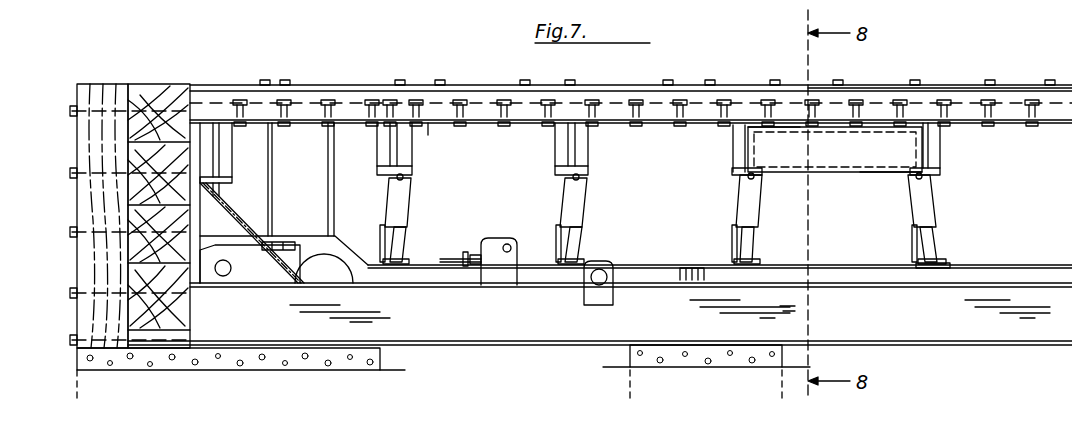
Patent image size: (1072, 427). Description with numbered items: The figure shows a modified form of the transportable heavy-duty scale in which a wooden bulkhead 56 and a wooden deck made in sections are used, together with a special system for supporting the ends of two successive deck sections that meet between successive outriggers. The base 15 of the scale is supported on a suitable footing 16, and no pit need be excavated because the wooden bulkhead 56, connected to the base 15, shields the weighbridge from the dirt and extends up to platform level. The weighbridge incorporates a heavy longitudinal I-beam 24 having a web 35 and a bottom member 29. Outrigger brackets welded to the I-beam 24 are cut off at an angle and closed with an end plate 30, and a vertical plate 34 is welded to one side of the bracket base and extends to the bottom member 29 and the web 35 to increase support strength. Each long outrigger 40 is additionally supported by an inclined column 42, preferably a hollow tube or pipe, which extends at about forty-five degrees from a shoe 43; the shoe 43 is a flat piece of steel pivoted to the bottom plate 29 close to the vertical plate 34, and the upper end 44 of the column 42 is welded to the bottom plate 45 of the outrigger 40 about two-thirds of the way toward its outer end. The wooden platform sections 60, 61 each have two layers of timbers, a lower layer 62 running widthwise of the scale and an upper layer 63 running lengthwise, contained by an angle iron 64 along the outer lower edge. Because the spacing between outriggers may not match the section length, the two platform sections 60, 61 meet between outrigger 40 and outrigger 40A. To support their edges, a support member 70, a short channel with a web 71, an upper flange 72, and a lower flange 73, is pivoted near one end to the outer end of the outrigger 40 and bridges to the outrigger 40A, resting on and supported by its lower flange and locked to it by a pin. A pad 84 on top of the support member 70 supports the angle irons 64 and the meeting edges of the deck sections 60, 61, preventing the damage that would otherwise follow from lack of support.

The base 15 is at (922, 342).
The footing 16 is at (370, 369).
The I-beam 24 is at (1046, 200).
The bottom member of the I-beam 29 is at (825, 266).
The end plate 30 is at (406, 201).
The vertical plate 34 is at (385, 241).
The web of the main I-beam 35 is at (672, 195).
The outrigger 40 is at (382, 150).
The outrigger 40A is at (745, 151).
The inclined column 42 is at (395, 246).
The shoe 43 is at (602, 266).
The upper end of the support 44 is at (382, 186).
The bottom plate of the outrigger 45 is at (402, 185).
The wooden bulkhead 56 is at (178, 85).
The wooden platform section 60 is at (648, 86).
The wooden platform section 61 is at (927, 84).
The lower layer of timbers 62 is at (388, 100).
The upper layer of timbers 63 is at (434, 98).
The angle iron 64 is at (428, 123).
The support member 70 is at (835, 165).
The web 71 is at (894, 158).
The upper flange 72 is at (798, 127).
The lower flange 73 is at (874, 172).
The pad 84 is at (812, 118).